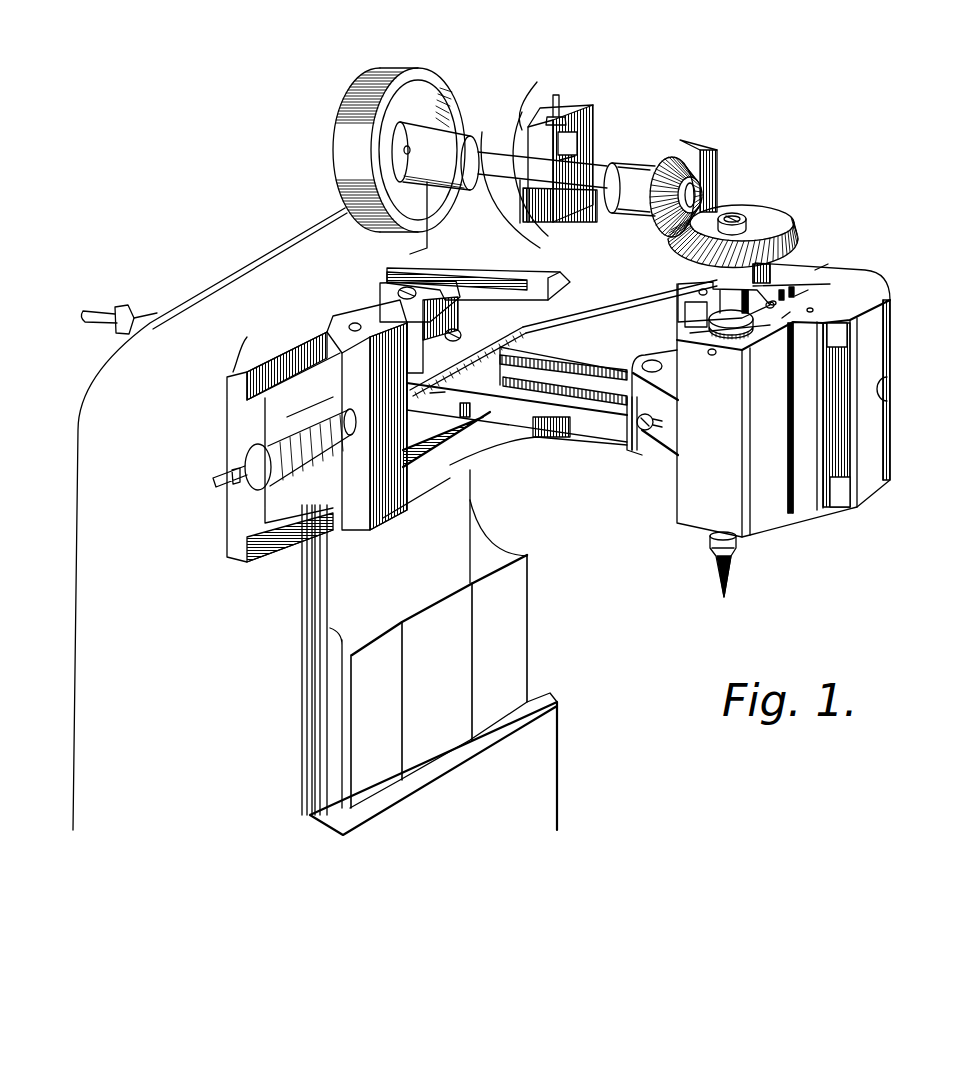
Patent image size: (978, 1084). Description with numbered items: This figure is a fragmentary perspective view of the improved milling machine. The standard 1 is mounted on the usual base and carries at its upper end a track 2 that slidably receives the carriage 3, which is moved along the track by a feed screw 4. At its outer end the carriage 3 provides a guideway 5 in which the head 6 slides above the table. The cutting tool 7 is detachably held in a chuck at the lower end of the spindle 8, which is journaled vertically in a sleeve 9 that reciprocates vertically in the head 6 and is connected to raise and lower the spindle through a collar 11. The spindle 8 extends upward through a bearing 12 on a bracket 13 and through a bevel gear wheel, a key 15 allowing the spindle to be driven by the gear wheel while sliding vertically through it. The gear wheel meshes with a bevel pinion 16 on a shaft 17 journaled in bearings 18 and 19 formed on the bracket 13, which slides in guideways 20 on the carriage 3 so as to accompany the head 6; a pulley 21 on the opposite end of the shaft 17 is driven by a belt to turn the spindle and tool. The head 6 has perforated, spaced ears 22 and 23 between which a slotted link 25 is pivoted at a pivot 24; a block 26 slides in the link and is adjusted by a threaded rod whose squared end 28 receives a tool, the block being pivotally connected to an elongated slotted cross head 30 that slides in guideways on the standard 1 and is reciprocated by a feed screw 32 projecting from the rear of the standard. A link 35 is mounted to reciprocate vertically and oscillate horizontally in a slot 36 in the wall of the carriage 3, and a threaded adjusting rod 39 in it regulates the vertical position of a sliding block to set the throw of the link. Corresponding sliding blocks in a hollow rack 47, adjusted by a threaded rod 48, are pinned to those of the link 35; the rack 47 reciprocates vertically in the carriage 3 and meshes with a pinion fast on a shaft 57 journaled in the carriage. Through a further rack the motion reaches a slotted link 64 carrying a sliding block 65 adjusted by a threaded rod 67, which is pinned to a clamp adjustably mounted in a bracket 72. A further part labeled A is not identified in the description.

The standard 1 is at (100, 536).
The track 2 is at (263, 417).
The carriage 3 is at (803, 293).
The feed screw 4 is at (232, 480).
The guideway 5 is at (812, 373).
The head 6 is at (767, 503).
The cutting tool 7 is at (733, 573).
The spindle 8 is at (745, 222).
The sleeve 9 is at (743, 358).
The collar 11 is at (750, 313).
The bearing 12 is at (752, 276).
The bracket 13 is at (460, 228).
The key 15 is at (724, 220).
The bevel pinion 16 is at (693, 174).
The shaft 17 is at (533, 238).
The bearing 18 is at (462, 140).
The bearing 19 is at (633, 178).
The guideways 20 is at (388, 268).
The pulley 21 is at (345, 129).
The ear 22 is at (675, 382).
The ear 23 is at (653, 462).
The pivot 24 is at (652, 361).
The slotted link 25 is at (587, 430).
The block 26 is at (484, 366).
The squared end 28 is at (658, 430).
The cross head 30 is at (467, 413).
The feed screw 32 is at (83, 316).
The link 35 is at (788, 318).
The slot 36 is at (820, 308).
The threaded adjusting rod 39 is at (822, 268).
The hollow rack 47 is at (849, 285).
The threaded rod 48 is at (800, 297).
The shaft 57 is at (893, 390).
The slotted link 64 is at (590, 128).
The sliding block 65 is at (585, 160).
The threaded rod 67 is at (562, 108).
The bracket 72 is at (537, 95).
The slide member A is at (432, 393).